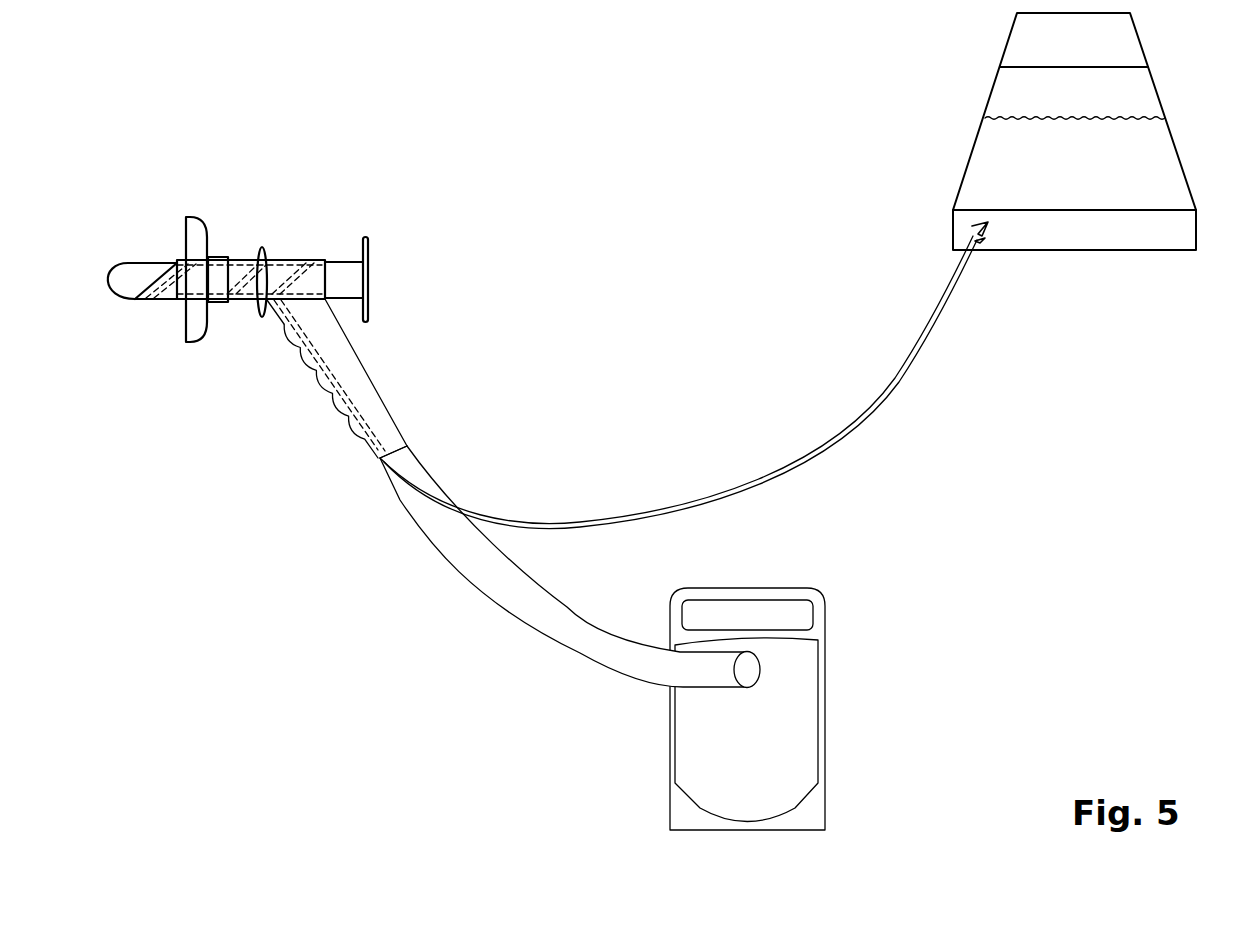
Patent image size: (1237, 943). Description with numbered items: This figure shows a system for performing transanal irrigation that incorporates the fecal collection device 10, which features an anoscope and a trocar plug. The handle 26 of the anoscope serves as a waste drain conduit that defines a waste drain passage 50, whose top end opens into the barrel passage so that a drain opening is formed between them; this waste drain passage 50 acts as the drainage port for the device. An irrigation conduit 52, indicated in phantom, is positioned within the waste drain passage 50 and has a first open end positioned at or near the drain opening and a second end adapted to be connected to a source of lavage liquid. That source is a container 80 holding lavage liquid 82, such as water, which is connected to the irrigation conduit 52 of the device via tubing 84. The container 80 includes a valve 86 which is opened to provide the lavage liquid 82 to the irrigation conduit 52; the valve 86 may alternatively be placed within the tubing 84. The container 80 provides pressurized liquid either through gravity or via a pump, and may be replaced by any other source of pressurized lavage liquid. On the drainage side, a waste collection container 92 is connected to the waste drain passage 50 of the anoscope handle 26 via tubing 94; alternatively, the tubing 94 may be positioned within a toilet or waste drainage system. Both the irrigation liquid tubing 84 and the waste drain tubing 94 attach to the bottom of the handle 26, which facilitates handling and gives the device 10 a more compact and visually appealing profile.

The fecal collection device 10 is at (208, 121).
The handle 26 is at (358, 353).
The waste drain passage 50 is at (372, 402).
The irrigation conduit 52 is at (338, 407).
The container 80 is at (1157, 90).
The lavage liquid 82 is at (1050, 166).
The tubing 84 is at (770, 477).
The valve 86 is at (972, 223).
The waste collection container 92 is at (827, 692).
The tubing 94 is at (492, 607).